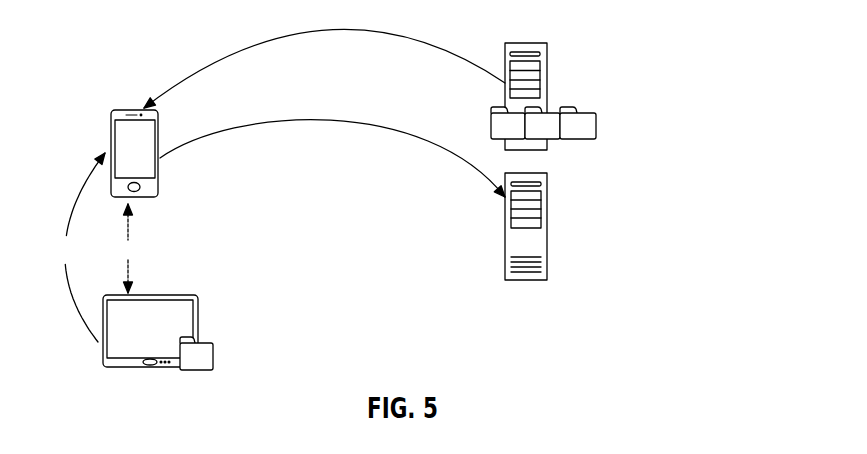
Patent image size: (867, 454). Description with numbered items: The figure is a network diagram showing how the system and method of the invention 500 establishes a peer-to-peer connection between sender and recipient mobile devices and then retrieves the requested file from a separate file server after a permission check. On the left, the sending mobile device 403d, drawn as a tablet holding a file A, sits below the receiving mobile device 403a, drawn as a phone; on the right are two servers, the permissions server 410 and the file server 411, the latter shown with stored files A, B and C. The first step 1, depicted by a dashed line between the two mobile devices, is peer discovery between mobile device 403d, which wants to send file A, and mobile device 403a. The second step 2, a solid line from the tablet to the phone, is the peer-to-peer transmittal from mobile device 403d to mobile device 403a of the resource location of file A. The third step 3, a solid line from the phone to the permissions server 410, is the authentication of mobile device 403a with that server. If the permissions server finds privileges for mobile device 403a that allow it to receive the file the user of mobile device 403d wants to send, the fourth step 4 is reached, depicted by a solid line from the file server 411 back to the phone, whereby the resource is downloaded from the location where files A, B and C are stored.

The system and method of the invention 500 is at (697, 20).
The mobile device 403a is at (174, 153).
The mobile device 403d is at (189, 323).
The file server 411 is at (557, 92).
The permissions server 410 is at (564, 223).
The fourth step 4 is at (324, 65).
The third step 3 is at (332, 154).
The second step 2 is at (82, 247).
The first step 1 is at (129, 248).